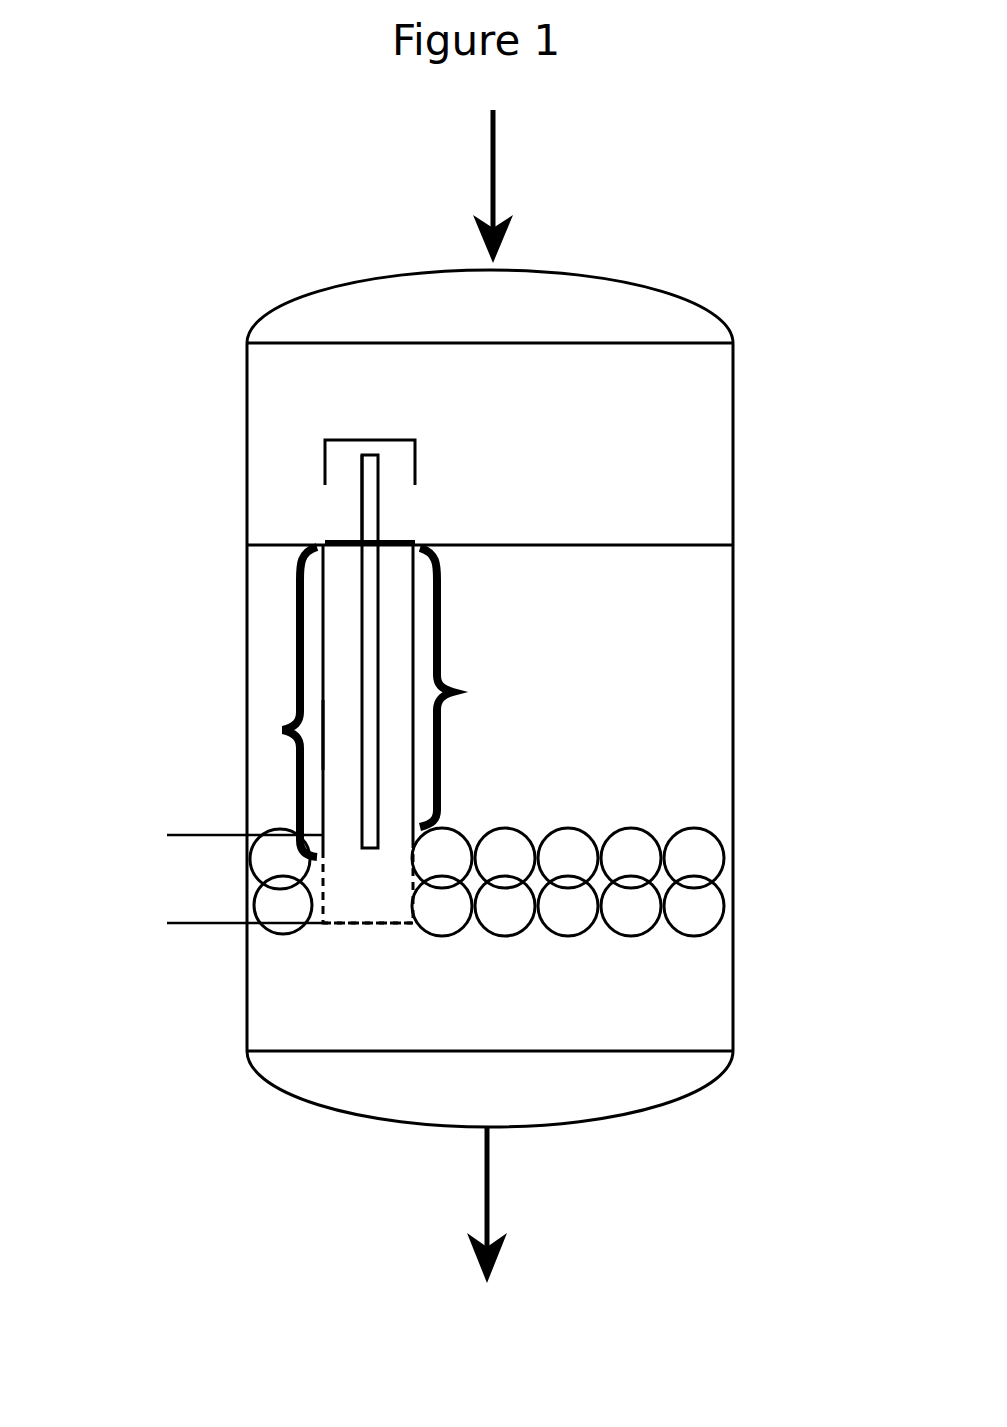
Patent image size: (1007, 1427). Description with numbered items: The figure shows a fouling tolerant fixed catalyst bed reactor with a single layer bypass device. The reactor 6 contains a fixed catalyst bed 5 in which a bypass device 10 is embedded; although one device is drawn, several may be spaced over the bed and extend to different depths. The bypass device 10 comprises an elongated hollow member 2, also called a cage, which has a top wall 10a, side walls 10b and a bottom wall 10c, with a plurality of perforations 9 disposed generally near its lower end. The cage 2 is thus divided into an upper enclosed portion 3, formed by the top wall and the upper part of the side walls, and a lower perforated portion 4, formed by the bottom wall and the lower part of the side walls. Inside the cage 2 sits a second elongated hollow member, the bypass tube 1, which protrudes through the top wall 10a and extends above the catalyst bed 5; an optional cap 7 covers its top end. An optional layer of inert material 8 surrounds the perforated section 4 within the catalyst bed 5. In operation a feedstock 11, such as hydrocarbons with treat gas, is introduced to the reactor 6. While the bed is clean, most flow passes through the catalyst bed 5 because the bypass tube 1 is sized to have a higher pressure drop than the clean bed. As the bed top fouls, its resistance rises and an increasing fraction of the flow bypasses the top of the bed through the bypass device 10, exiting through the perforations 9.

The bypass tube 1 is at (358, 520).
The elongated hollow member 2 is at (323, 735).
The upper enclosed portion 3 is at (453, 692).
The lower perforated portion 4 is at (163, 835).
The fixed catalyst bed 5 is at (490, 593).
The fouling tolerant reactor 6 is at (733, 698).
The cap 7 is at (415, 463).
The layer of inert material 8 is at (733, 897).
The perforations 9 is at (328, 932).
The single layer bypass device 10 is at (292, 520).
The top wall 10a is at (395, 542).
The side walls 10b is at (323, 735).
The bottom wall 10c is at (407, 928).
The feedstock 11 is at (530, 186).